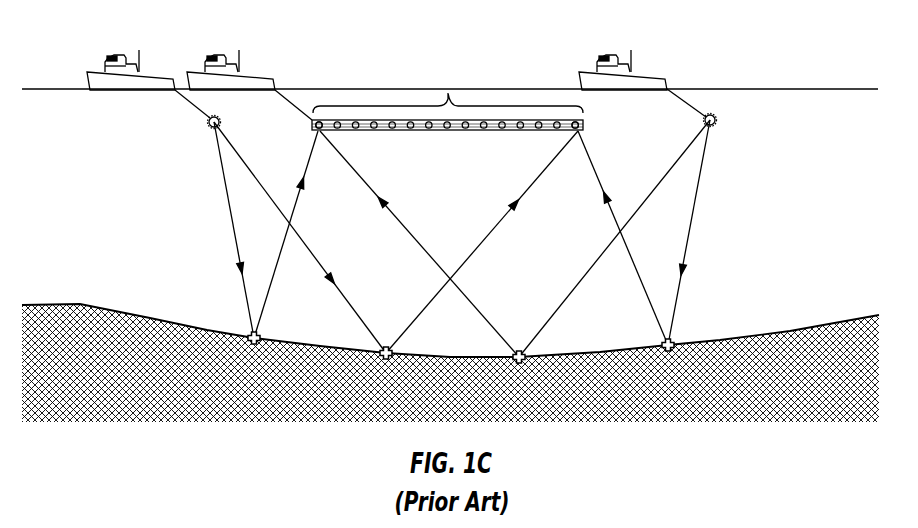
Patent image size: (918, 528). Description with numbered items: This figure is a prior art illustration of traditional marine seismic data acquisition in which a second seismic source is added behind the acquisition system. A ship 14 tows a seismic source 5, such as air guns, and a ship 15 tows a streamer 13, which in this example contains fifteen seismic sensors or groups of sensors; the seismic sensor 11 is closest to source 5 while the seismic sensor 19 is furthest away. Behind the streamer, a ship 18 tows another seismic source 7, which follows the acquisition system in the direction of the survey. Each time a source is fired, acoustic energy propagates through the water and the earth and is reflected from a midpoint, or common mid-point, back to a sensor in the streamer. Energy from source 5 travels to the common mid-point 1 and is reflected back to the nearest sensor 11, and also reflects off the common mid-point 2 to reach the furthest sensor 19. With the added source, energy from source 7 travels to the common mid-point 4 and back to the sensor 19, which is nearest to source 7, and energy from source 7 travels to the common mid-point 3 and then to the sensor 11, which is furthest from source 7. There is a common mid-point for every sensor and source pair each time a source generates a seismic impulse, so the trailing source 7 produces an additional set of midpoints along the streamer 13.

The common mid-point 1 is at (227, 358).
The common mid-point 2 is at (359, 373).
The common mid-point 3 is at (493, 377).
The common mid-point 4 is at (638, 370).
The seismic source 5 is at (189, 139).
The seismic source 7 is at (746, 142).
The seismic sensor 11 is at (367, 147).
The streamer 13 is at (447, 89).
The ship 14 is at (106, 59).
The ship 15 is at (254, 59).
The ship 18 is at (648, 59).
The seismic sensor 19 is at (607, 146).